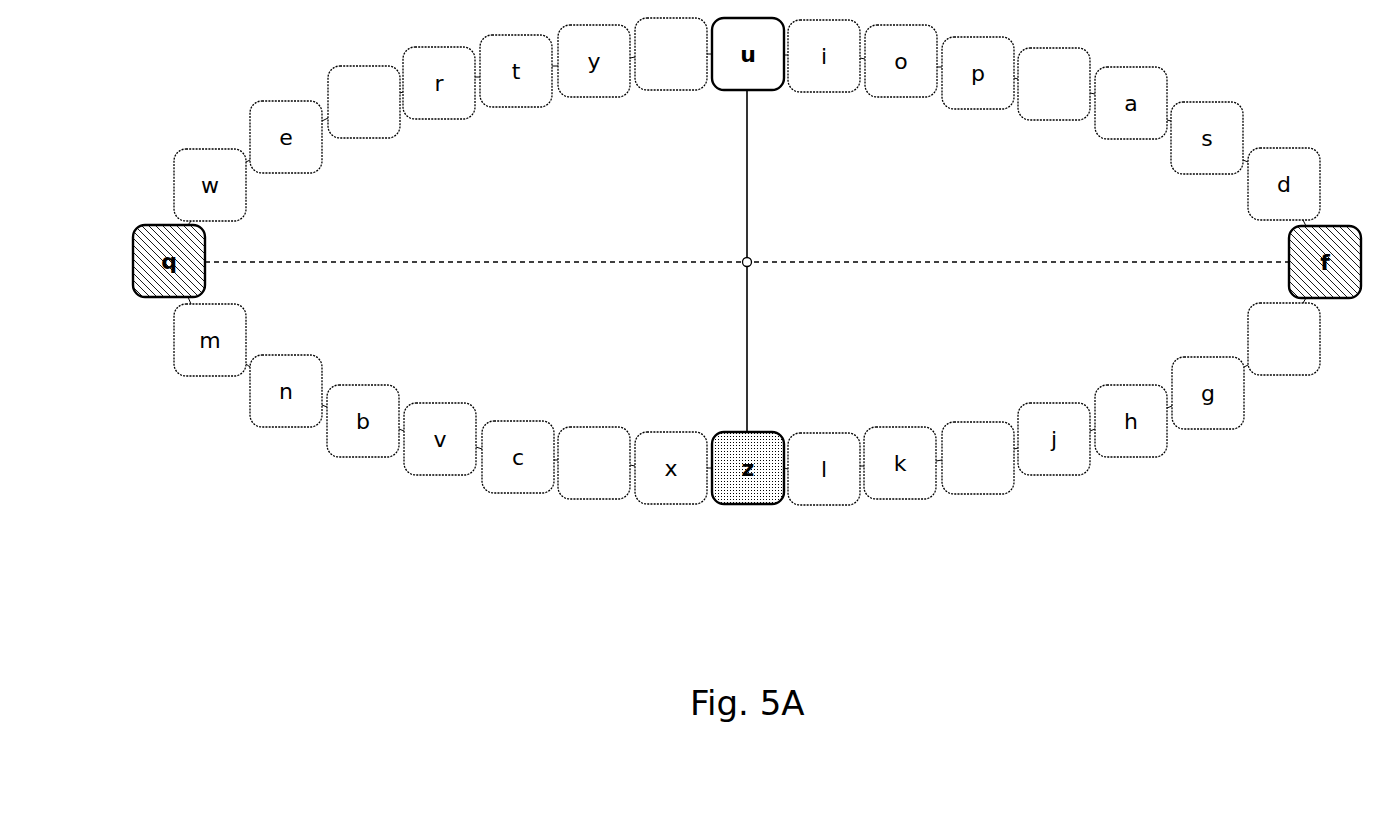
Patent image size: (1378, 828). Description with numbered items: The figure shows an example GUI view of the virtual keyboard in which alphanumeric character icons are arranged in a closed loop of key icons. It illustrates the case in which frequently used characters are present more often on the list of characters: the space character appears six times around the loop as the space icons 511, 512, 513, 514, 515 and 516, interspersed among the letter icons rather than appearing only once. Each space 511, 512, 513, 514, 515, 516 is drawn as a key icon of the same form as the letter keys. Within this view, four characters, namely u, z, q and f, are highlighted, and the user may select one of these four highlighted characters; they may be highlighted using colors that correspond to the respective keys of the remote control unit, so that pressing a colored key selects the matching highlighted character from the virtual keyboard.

The space 511 is at (1283, 362).
The space 512 is at (957, 479).
The space 513 is at (573, 485).
The space 514 is at (455, 180).
The space 515 is at (649, 78).
The space 516 is at (1033, 107).